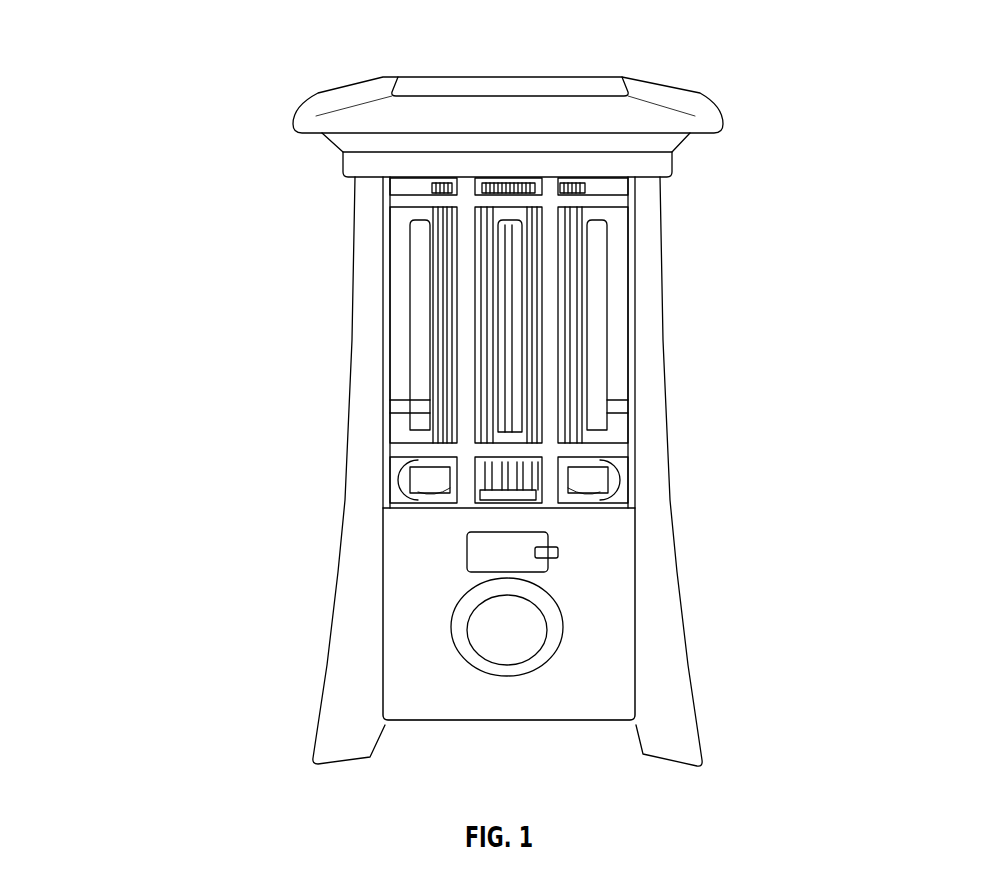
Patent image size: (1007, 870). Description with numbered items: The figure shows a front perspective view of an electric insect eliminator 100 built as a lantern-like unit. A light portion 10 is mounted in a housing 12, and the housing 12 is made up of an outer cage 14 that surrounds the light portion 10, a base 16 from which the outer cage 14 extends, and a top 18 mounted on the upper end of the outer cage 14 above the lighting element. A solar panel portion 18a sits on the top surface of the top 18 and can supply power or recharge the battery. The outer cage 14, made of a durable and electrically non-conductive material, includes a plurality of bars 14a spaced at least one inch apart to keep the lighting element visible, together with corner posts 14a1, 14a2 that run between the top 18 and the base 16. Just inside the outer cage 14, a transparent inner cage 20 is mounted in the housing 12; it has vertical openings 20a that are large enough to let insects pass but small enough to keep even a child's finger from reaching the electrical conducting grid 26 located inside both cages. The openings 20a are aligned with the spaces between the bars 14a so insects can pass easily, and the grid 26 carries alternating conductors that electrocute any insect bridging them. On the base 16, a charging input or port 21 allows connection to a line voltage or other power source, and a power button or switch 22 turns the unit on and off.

The electric insect eliminator 100 is at (278, 137).
The light portion 10 is at (512, 368).
The housing 12 is at (672, 452).
The outer cage 14 is at (365, 230).
The bars 14a is at (463, 308).
The corner post 14a1 is at (370, 408).
The corner post 14a2 is at (678, 517).
The base 16 is at (597, 640).
The top 18 is at (660, 90).
The solar panel portion 18a is at (452, 93).
The transparent inner cage 20 is at (620, 230).
The openings 20a is at (430, 268).
The charging input or port 21 is at (510, 540).
The power button or switch 22 is at (498, 625).
The electrical conducting grid 26 is at (583, 295).